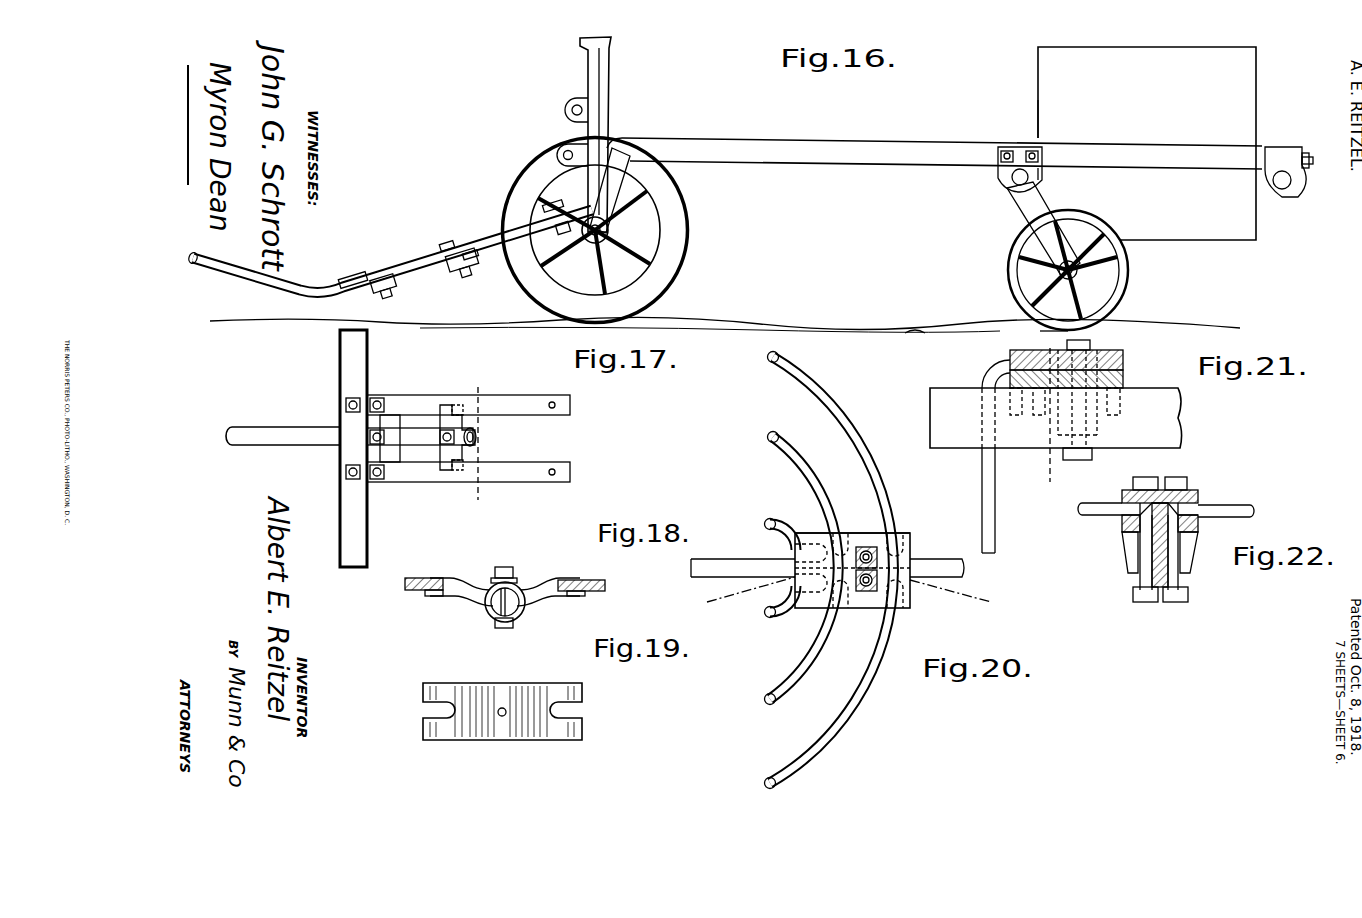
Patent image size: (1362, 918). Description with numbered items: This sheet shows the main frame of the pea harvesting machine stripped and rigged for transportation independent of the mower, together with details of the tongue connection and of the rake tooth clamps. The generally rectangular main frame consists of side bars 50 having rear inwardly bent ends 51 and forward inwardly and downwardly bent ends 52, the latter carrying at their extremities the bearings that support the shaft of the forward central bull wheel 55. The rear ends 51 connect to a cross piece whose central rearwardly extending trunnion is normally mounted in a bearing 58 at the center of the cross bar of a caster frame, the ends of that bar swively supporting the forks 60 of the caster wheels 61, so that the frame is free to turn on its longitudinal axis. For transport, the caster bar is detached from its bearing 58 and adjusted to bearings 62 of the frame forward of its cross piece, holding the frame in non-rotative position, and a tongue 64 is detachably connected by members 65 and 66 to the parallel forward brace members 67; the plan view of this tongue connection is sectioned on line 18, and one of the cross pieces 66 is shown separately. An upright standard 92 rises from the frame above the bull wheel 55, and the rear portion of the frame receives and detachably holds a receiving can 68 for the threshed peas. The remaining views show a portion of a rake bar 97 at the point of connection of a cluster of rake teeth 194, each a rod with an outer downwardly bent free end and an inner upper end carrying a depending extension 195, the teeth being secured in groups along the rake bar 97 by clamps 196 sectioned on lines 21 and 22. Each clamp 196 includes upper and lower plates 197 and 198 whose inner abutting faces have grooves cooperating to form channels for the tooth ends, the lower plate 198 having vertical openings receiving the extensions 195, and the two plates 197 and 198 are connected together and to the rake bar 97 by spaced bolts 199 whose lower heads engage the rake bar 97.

In FIG. 17, the section line 18 is at (478, 445).
In FIG. 20, the section line 21 is at (848, 596).
In FIG. 16, the section line 22 is at (1054, 336).
In FIG. 21, the section line 22 is at (1049, 412).
In FIG. 16, the side bar 50 is at (900, 150).
In FIG. 16, the rear inwardly bent end 51 is at (1143, 157).
In FIG. 16, the forward inwardly and downwardly bent end 52 is at (622, 165).
In FIG. 16, the bull wheel 55 is at (528, 280).
In FIG. 16, the bearing 58 is at (1283, 154).
In FIG. 16, the fork 60 is at (1022, 196).
In FIG. 16, the caster wheel 61 is at (1015, 283).
In FIG. 16, the bearing 62 is at (1020, 160).
In FIG. 16, the tongue 64 is at (283, 288).
In FIG. 17, the tongue 64 is at (295, 436).
In FIG. 18, the tongue 64 is at (491, 608).
In FIG. 16, the connecting member 65 is at (383, 283).
In FIG. 17, the connecting member 65 is at (384, 420).
In FIG. 16, the connecting member 66 is at (459, 243).
In FIG. 17, the connecting member 66 is at (470, 420).
In FIG. 18, the connecting member 66 is at (527, 592).
In FIG. 19, the connecting member 66 is at (458, 692).
In FIG. 16, the forward brace member 67 is at (483, 258).
In FIG. 17, the forward brace member 67 is at (422, 403).
In FIG. 18, the forward brace member 67 is at (406, 584).
In FIG. 16, the receiving can 68 is at (1055, 112).
In FIG. 16, the standard post 92 is at (596, 83).
In FIG. 20, the tooth bar 97 is at (725, 570).
In FIG. 21, the tooth bar 97 is at (1170, 437).
In FIG. 22, the tooth bar 97 is at (1150, 574).
In FIG. 20, the rake tooth 194 is at (828, 623).
In FIG. 21, the rake tooth 194 is at (982, 468).
In FIG. 22, the rake tooth 194 is at (1108, 512).
In FIG. 22, the depending extension 195 is at (1138, 545).
In FIG. 20, the clamp 196 is at (910, 554).
In FIG. 21, the clamp 196 is at (1010, 361).
In FIG. 22, the clamp 196 is at (1198, 496).
In FIG. 20, the upper plate 197 is at (822, 541).
In FIG. 21, the upper plate 197 is at (1123, 358).
In FIG. 22, the upper plate 197 is at (1122, 495).
In FIG. 21, the lower plate 198 is at (1123, 380).
In FIG. 22, the lower plate 198 is at (1198, 526).
In FIG. 20, the bolt 199 is at (866, 550).
In FIG. 21, the bolt 199 is at (1082, 460).
In FIG. 22, the bolt 199 is at (1140, 478).